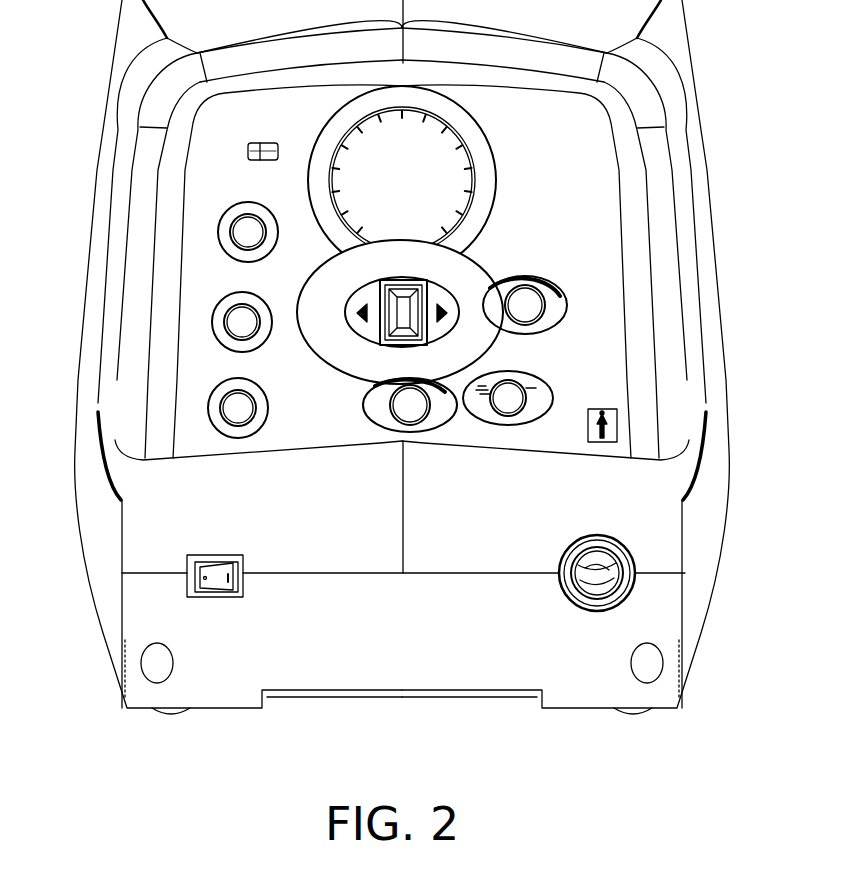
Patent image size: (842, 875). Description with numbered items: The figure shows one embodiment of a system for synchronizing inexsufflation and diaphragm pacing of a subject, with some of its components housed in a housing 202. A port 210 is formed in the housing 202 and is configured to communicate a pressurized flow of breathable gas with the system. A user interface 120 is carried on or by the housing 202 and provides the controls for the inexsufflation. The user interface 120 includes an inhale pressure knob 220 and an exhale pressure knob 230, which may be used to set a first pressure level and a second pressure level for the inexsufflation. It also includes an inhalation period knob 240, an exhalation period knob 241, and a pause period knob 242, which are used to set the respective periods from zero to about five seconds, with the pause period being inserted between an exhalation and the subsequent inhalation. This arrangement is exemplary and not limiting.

The user interface 120 is at (404, 299).
The housing 202 is at (147, 690).
The port 210 is at (632, 552).
The inhale pressure knob 220 is at (568, 315).
The pressure knob 230 is at (418, 425).
The inhalation period knob 240 is at (240, 232).
The exhalation period knob 241 is at (240, 322).
The pause period knob 242 is at (236, 408).